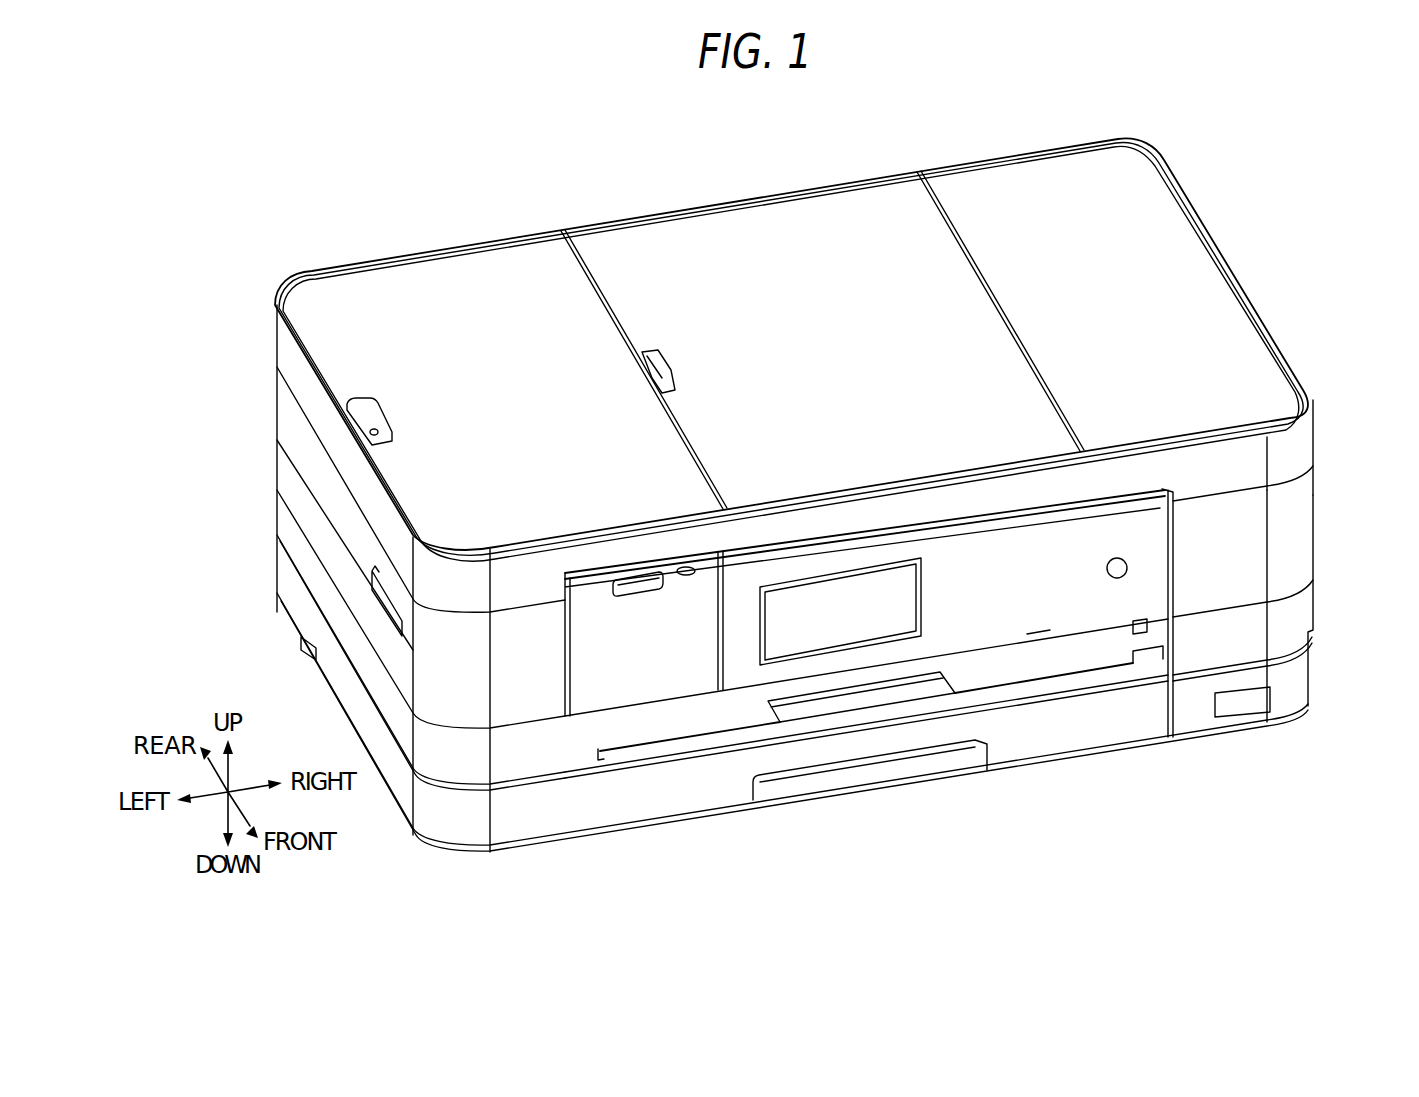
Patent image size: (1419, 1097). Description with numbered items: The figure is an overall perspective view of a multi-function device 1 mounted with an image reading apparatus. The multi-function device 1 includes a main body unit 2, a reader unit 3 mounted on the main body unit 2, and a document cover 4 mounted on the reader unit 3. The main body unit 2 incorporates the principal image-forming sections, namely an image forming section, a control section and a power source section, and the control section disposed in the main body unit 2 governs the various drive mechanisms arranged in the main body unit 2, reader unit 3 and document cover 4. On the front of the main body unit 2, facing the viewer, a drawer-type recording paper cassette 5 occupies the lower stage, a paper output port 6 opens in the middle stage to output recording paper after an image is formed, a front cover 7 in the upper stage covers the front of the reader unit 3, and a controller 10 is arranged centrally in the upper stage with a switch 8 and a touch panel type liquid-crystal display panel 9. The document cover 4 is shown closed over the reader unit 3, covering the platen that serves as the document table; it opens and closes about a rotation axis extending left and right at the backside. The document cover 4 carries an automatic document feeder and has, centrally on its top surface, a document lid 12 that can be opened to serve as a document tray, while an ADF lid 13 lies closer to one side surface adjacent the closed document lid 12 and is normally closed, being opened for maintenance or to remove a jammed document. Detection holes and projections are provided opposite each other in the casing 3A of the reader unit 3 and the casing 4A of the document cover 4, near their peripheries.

The multi-function device 1 is at (250, 230).
The main body unit 2 is at (243, 548).
The reader unit 3 is at (252, 381).
The casing of the reader unit 3A is at (281, 402).
The document cover 4 is at (252, 322).
The casing of the document cover 4A is at (1287, 450).
The recording paper cassette 5 is at (1073, 725).
The paper output port 6 is at (633, 720).
The front cover 7 is at (1292, 542).
The switch 8 is at (1123, 576).
The liquid-crystal display panel 9 is at (850, 633).
The controller 10 is at (977, 613).
The document lid 12 is at (723, 240).
The ADF lid 13 is at (461, 277).